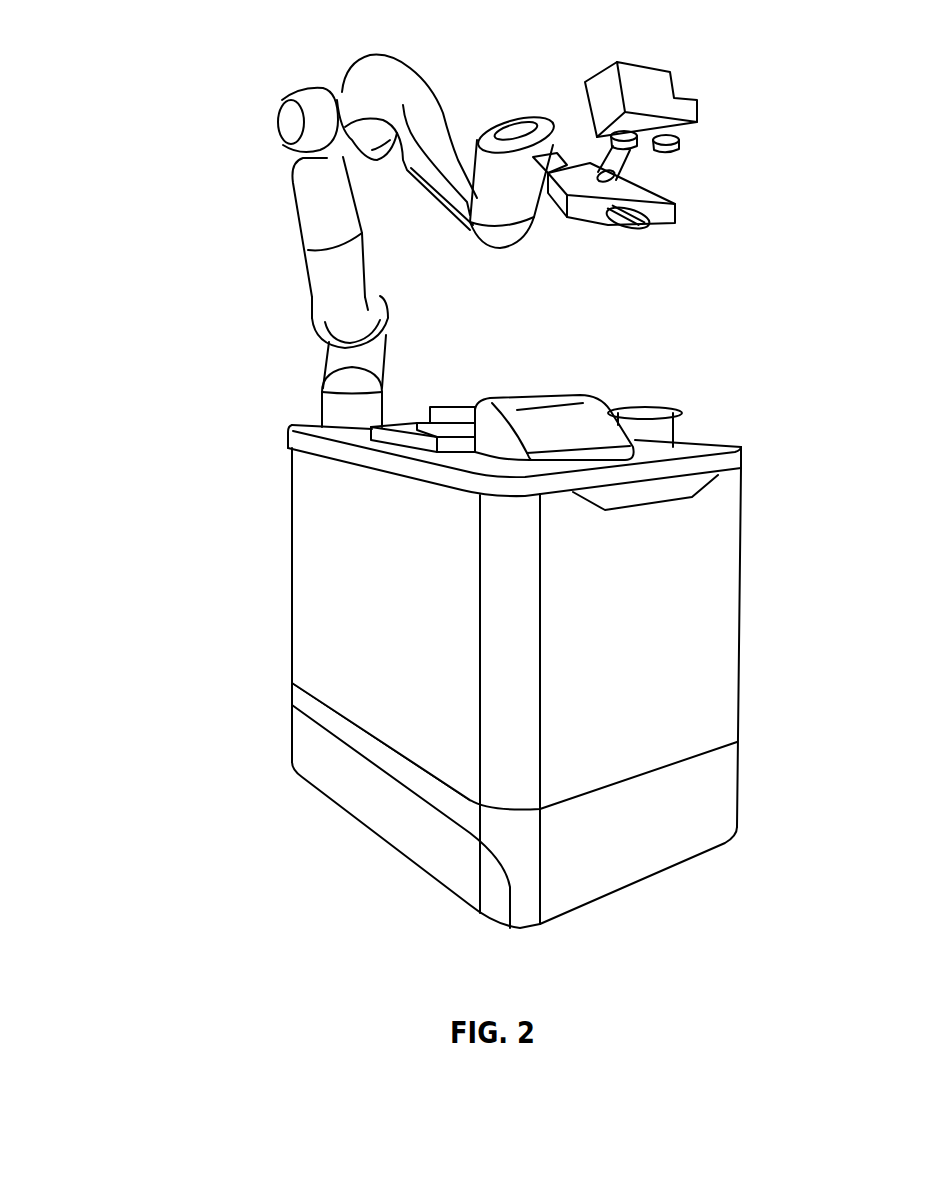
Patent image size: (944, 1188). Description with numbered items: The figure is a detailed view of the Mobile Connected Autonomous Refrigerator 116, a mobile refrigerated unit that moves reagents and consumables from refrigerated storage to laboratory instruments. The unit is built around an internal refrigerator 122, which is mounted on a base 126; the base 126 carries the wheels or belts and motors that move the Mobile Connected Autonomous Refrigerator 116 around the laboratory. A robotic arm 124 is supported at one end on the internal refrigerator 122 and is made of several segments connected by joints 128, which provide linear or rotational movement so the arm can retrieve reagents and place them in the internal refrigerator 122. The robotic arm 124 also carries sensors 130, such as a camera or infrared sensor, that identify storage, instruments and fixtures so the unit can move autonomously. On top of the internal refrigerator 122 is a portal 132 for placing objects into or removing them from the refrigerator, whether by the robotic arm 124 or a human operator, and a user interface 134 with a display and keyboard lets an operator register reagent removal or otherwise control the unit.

The Mobile Connected Autonomous Refrigerator 116 is at (126, 85).
The internal refrigerator 122 is at (318, 601).
The robotic arm 124 is at (278, 86).
The base 126 is at (723, 795).
The joints 128 is at (480, 233).
The sensors 130 is at (660, 92).
The portal 132 is at (415, 422).
The user interface 134 is at (582, 403).